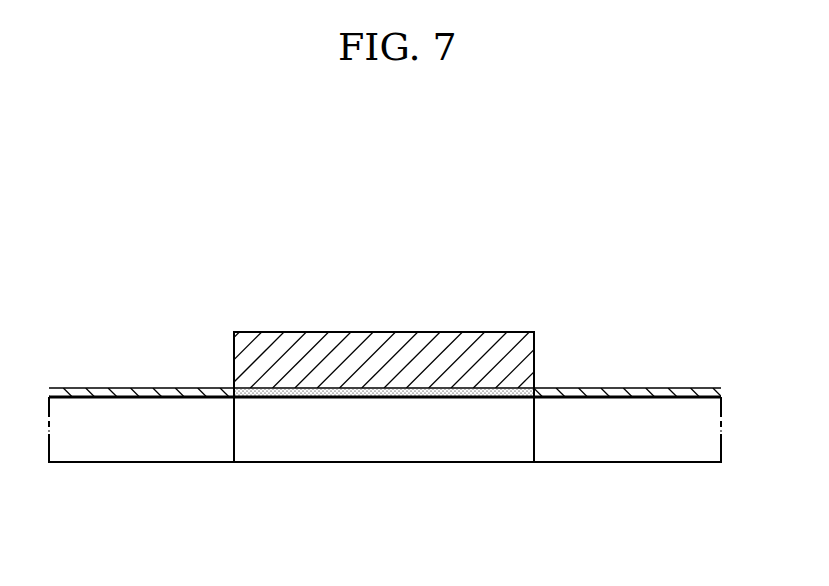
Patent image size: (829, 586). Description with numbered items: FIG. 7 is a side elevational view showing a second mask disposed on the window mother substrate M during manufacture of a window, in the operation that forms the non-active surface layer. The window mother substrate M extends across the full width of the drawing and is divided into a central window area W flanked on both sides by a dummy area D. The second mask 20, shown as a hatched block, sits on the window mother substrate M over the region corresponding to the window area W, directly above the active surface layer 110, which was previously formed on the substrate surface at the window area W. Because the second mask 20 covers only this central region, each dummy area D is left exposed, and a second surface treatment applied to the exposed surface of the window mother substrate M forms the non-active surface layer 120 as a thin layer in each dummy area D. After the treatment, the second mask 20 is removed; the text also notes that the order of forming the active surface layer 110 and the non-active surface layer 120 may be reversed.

The second mask 20 is at (481, 345).
The active surface layer 110 is at (344, 393).
The non-active surface layer 120 is at (125, 391).
The dummy area D is at (150, 455).
The window area W is at (390, 455).
The window mother substrate M is at (638, 517).